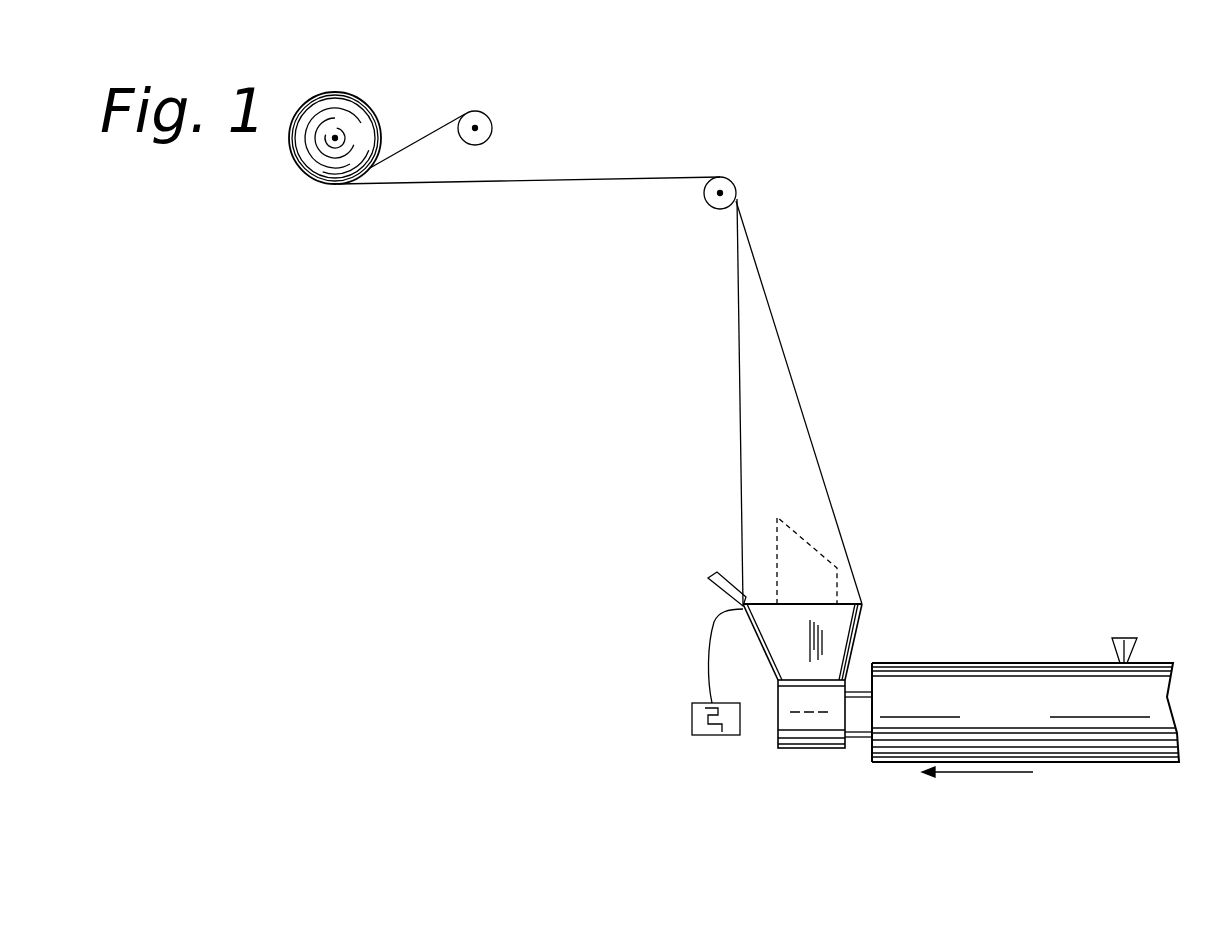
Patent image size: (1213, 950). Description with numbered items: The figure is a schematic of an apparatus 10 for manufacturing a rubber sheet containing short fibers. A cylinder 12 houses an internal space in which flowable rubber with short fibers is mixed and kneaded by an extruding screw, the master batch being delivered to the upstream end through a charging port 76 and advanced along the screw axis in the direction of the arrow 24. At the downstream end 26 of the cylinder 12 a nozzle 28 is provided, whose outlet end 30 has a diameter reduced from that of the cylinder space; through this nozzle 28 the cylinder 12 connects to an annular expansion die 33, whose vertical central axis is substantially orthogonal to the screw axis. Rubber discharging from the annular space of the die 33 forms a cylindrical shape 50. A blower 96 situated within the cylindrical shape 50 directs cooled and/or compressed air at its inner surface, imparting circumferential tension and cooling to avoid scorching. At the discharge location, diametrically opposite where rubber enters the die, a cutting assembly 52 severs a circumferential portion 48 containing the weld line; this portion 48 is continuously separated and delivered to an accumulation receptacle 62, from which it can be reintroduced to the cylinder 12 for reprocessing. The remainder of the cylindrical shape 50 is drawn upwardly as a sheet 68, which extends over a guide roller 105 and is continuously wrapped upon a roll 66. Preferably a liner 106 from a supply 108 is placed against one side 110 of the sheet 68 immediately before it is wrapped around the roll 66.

The apparatus 10 is at (1023, 497).
The cylinder 12 is at (1025, 685).
The arrow 24 is at (977, 801).
The downstream end 26 is at (892, 686).
The nozzle 28 is at (853, 744).
The outlet end 30 is at (802, 738).
The annular expansion die 33 is at (833, 629).
The circumferential portion 48 is at (691, 707).
The cylindrical shape 50 is at (720, 563).
The cutting assembly 52 is at (710, 647).
The accumulation receptacle 62 is at (692, 752).
The roll 66 is at (348, 123).
The sheet 68 is at (600, 323).
The charging port 76 is at (1134, 624).
The blower 96 is at (836, 543).
The guide roller 105 is at (701, 222).
The liner 106 is at (427, 122).
The supply 108 is at (498, 101).
The one side 110 is at (610, 152).